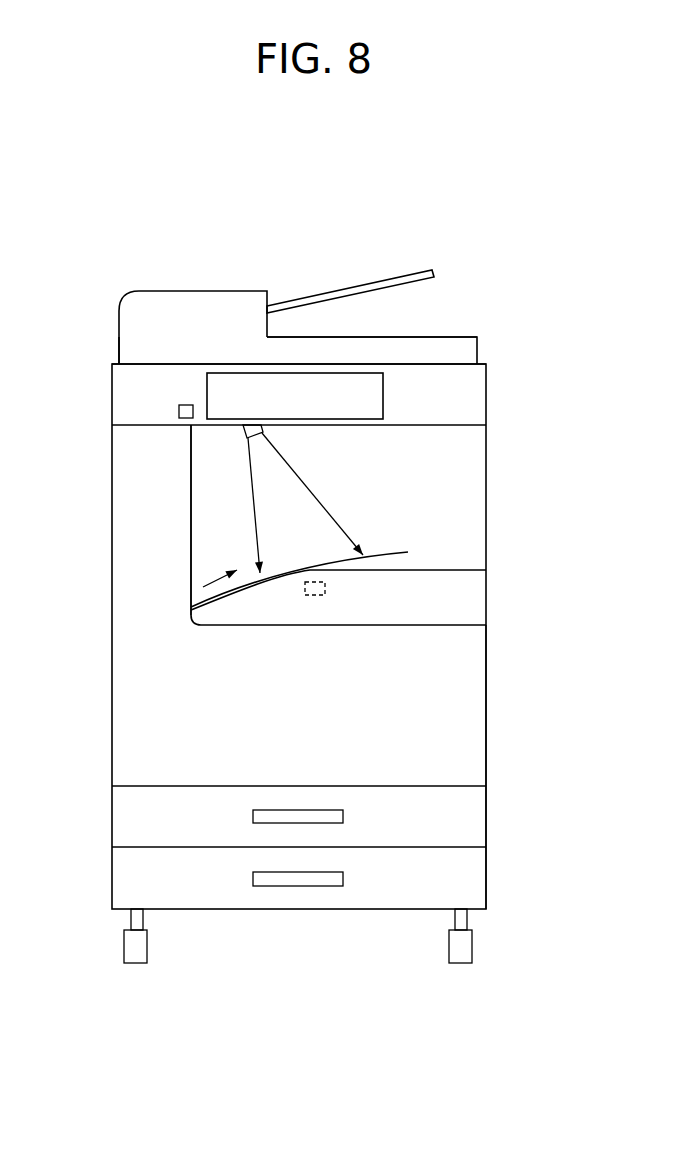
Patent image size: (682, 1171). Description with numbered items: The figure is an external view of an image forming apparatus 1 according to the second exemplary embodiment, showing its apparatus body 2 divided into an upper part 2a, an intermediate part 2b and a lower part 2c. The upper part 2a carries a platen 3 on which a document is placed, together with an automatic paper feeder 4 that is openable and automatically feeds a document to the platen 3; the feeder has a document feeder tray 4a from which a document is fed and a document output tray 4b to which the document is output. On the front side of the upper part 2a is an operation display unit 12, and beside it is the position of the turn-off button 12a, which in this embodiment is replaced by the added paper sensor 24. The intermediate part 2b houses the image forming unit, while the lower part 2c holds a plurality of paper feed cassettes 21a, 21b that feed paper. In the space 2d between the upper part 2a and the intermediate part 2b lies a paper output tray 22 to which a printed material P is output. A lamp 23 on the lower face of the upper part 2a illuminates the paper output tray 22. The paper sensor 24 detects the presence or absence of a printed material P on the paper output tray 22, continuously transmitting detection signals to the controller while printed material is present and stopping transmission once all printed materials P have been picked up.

The image forming apparatus 1 is at (523, 202).
The apparatus body 2 is at (493, 345).
The upper part 2a is at (487, 393).
The intermediate part 2b is at (468, 678).
The lower part 2c is at (487, 815).
The space 2d is at (468, 450).
The platen 3 is at (442, 364).
The automatic paper feeder 4 is at (177, 302).
The document feeder tray 4a is at (367, 280).
The document output tray 4b is at (408, 337).
The operation display unit 12 is at (218, 396).
The turn-off button 12a is at (178, 412).
The paper feed cassette 21a is at (127, 817).
The paper feed cassette 21b is at (127, 877).
The paper output tray 22 is at (450, 568).
The lamp 23 is at (243, 427).
The paper sensor 24 is at (325, 588).
The printed material P is at (408, 552).